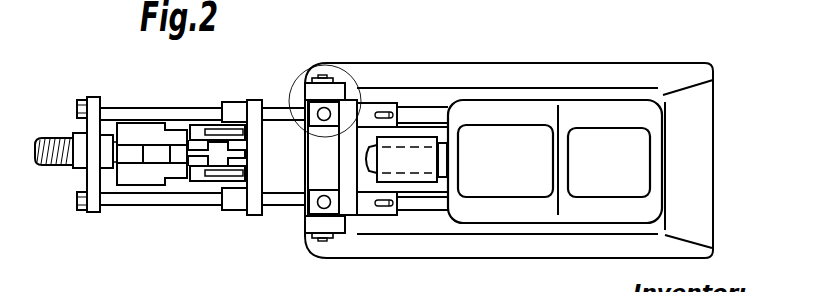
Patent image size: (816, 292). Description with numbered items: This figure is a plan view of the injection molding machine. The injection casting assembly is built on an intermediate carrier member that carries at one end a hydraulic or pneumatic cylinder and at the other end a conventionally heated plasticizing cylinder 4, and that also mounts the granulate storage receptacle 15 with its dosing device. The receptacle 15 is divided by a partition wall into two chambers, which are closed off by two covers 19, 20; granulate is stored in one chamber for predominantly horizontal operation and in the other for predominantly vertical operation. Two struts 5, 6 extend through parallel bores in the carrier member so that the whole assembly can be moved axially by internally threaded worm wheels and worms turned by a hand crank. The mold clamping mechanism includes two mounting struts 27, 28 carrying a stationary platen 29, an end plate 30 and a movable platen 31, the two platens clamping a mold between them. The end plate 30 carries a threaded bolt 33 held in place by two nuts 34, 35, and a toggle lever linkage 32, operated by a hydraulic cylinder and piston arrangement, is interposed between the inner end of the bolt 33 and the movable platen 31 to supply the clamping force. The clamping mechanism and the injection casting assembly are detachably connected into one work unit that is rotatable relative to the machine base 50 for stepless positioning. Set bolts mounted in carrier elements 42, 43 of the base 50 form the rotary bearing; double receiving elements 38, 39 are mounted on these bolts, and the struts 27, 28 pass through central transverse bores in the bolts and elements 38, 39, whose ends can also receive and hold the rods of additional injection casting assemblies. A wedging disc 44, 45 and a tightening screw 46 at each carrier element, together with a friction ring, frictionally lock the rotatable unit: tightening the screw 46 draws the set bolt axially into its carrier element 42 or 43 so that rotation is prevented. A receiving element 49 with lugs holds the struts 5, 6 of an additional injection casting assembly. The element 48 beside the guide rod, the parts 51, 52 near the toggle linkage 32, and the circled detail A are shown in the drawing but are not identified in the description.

The plasticizing cylinder 4 is at (396, 152).
The strut 5 is at (434, 113).
The strut 6 is at (442, 205).
The granulate storage receptacle 15 is at (607, 110).
The cover 19 is at (535, 140).
The cover 20 is at (613, 137).
The mounting strut 27 is at (275, 112).
The mounting strut 28 is at (297, 205).
The stationary platen 29 is at (347, 163).
The end plate 30 is at (95, 107).
The movable platen 31 is at (258, 207).
The toggle lever linkage 32 is at (146, 170).
The threaded bolt 33 is at (52, 167).
The nut 34 is at (82, 143).
The nut 35 is at (104, 145).
The double receiving element 38 is at (310, 127).
The double receiving element 39 is at (337, 197).
The carrier element 42 is at (337, 92).
The carrier element 43 is at (342, 227).
The wedging disc 44 is at (330, 85).
The wedging disc 45 is at (328, 235).
The tightening screw 46 is at (322, 77).
The upper guide block 48 is at (370, 110).
The receiving element 49 is at (374, 210).
The machine base 50 is at (522, 68).
The lower contact arm 51 is at (212, 182).
The upper contact arm 52 is at (213, 137).
The detail circle A is at (318, 101).